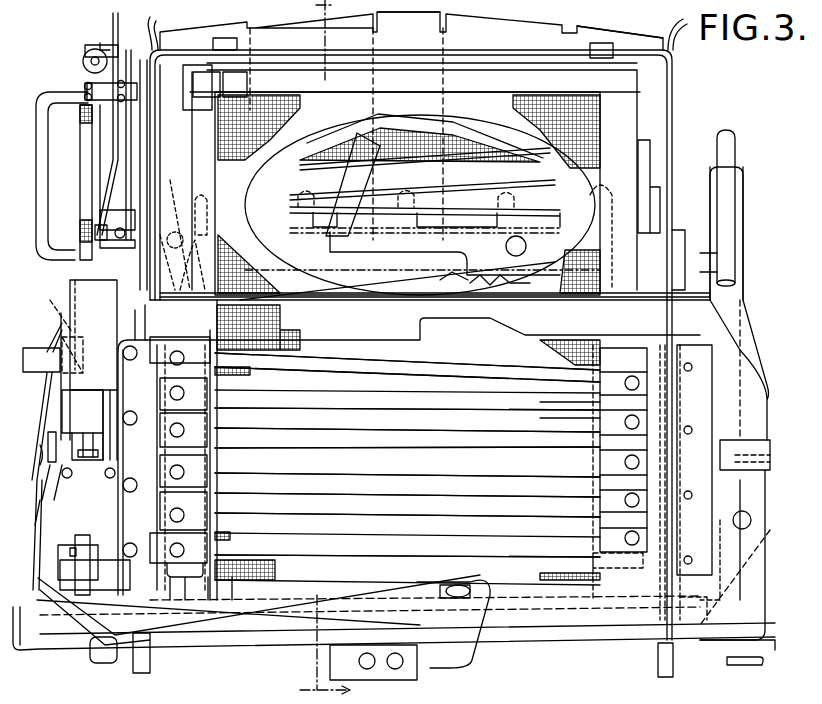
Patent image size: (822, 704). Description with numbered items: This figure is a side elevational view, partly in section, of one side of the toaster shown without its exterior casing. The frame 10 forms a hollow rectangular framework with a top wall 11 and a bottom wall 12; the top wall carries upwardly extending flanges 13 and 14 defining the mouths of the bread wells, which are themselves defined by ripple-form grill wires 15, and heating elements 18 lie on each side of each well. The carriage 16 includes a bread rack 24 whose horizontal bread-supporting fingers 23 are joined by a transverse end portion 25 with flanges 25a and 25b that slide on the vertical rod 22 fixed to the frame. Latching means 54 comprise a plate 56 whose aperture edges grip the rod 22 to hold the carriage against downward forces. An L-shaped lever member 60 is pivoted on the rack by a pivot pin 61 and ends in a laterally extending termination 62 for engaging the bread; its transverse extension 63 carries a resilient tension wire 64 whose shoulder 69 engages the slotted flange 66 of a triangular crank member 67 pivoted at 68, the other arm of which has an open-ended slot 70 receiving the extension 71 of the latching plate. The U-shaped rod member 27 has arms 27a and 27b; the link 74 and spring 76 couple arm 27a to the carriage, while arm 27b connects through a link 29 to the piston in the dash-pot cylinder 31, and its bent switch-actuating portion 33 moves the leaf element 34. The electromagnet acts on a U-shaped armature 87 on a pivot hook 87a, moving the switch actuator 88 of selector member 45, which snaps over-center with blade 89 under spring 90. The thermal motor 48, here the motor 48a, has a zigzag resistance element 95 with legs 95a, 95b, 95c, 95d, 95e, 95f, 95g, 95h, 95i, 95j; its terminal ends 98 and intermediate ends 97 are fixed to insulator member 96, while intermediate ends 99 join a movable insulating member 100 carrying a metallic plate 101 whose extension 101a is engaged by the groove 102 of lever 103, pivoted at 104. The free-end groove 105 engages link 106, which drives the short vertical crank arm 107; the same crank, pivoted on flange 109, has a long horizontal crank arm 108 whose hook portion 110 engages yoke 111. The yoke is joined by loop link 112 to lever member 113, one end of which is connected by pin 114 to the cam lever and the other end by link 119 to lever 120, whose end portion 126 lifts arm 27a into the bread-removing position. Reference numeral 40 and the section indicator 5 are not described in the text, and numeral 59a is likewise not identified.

The frame 10 is at (684, 113).
The top wall 11 is at (632, 35).
The bottom wall 12 is at (555, 640).
The flange 13 is at (208, 30).
The flange 14 is at (160, 28).
The grill wires 15 is at (525, 13).
The carriage 16 is at (458, 202).
The heating elements 18 is at (398, 168).
The rod 22 is at (128, 45).
The bread-supporting fingers 23 is at (310, 195).
The bread rack 24 is at (676, 228).
The transverse end portion 25 is at (183, 100).
The flange 25a is at (98, 43).
The flange 25b is at (140, 315).
The U-shaped rod member 27 is at (40, 180).
The arm 27a is at (45, 92).
The arm 27b is at (736, 148).
The link 29 is at (740, 312).
The dash-pot cylinder 31 is at (728, 418).
The switch-actuating portion 33 is at (730, 268).
The leaf element 34 is at (760, 535).
The block 40 is at (58, 426).
The switch selector member 45 is at (60, 473).
The thermal motor 48 is at (535, 345).
The thermal motor 48a is at (388, 335).
The latching means 54 is at (115, 213).
The plate 56 is at (132, 213).
The pulley 59a is at (90, 68).
The L-shaped lever member 60 is at (415, 252).
The pivot pin 61 is at (505, 242).
The laterally extending termination 62 is at (372, 135).
The transverse extension 63 is at (535, 280).
The resilient tension wire 64 is at (458, 283).
The flange 66 is at (182, 248).
The triangular crank member 67 is at (209, 205).
The pivot 68 is at (132, 235).
The transverse shoulder 69 is at (190, 303).
The open-ended slot 70 is at (125, 270).
The extension 71 is at (118, 222).
The link 74 is at (108, 20).
The spring 76 is at (80, 145).
The U-shaped armature 87 is at (98, 548).
The pivot hook 87a is at (70, 552).
The switch actuator 88 is at (82, 535).
The blade 89 is at (90, 433).
The spring 90 is at (100, 457).
The resistance element 95 is at (440, 365).
The leg 95a is at (482, 375).
The leg 95b is at (348, 385).
The leg 95c is at (295, 400).
The leg 95d is at (360, 426).
The leg 95e is at (490, 446).
The leg 95f is at (260, 470).
The leg 95g is at (517, 492).
The leg 95h is at (428, 507).
The leg 95i is at (483, 530).
The leg 95j is at (356, 545).
The insulator member 96 is at (135, 342).
The intermediate ends 97 is at (167, 423).
The terminal ends 98 is at (198, 345).
The intermediate ends 99 is at (640, 378).
The insulating member 100 is at (615, 347).
The metallic plate 101 is at (686, 347).
The extension 101a is at (760, 452).
The groove 102 is at (770, 440).
The lever 103 is at (765, 585).
The pivot 104 is at (750, 512).
The groove 105 is at (765, 668).
The link 106 is at (708, 655).
The short vertical crank arm 107 is at (432, 660).
The long horizontal crank arm 108 is at (245, 648).
The flange 109 is at (455, 585).
The hook portion 110 is at (40, 590).
The yoke 111 is at (40, 508).
The loop link 112 is at (42, 481).
The lever member 113 is at (48, 438).
The pin 114 is at (42, 450).
The link 119 is at (50, 380).
The lever 120 is at (58, 312).
The end portion 126 is at (36, 347).
The section line 5 is at (319, 349).